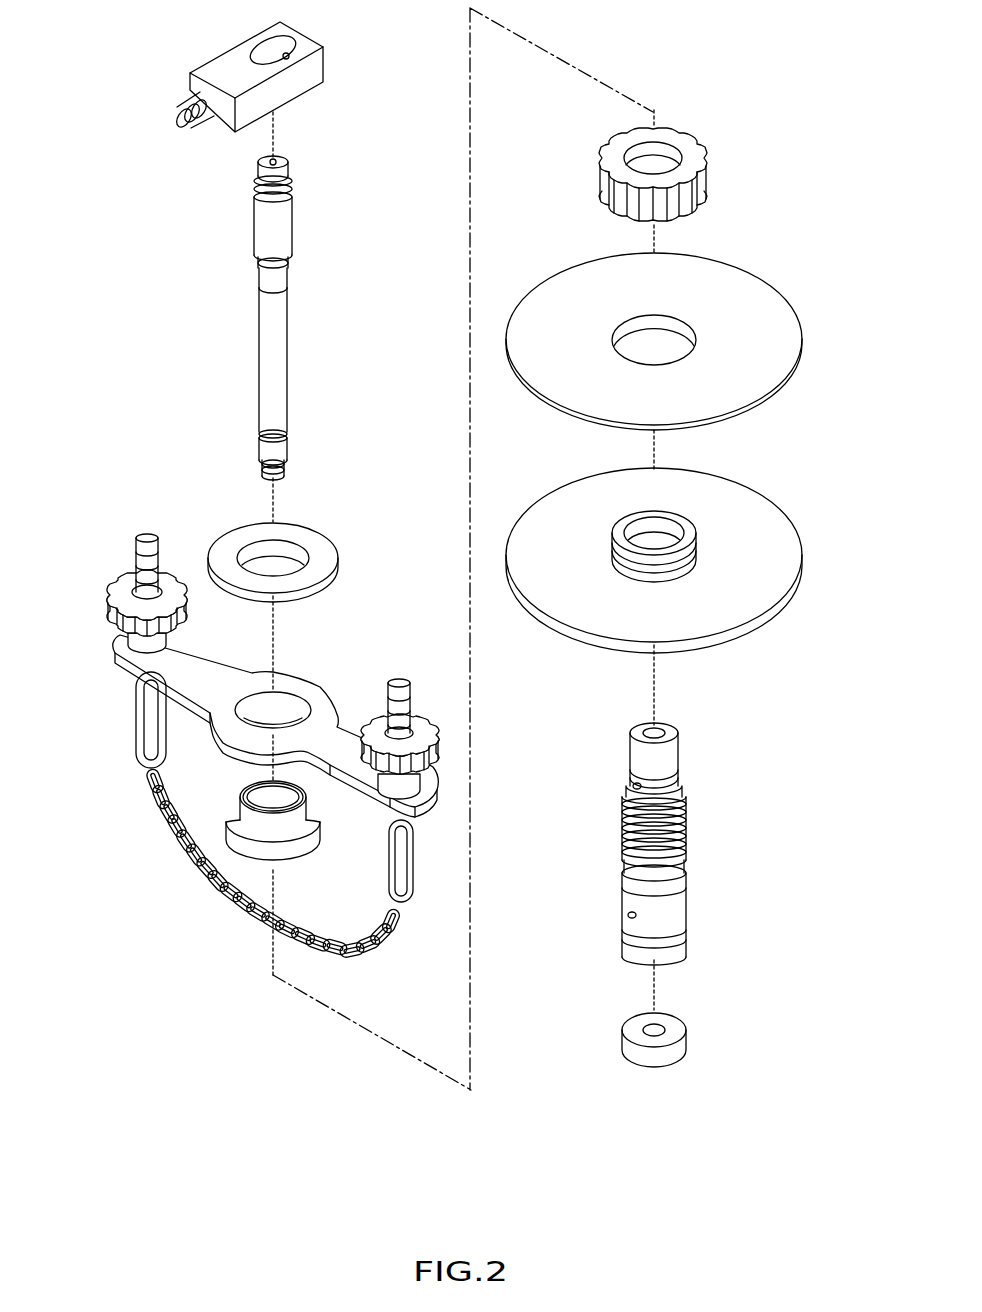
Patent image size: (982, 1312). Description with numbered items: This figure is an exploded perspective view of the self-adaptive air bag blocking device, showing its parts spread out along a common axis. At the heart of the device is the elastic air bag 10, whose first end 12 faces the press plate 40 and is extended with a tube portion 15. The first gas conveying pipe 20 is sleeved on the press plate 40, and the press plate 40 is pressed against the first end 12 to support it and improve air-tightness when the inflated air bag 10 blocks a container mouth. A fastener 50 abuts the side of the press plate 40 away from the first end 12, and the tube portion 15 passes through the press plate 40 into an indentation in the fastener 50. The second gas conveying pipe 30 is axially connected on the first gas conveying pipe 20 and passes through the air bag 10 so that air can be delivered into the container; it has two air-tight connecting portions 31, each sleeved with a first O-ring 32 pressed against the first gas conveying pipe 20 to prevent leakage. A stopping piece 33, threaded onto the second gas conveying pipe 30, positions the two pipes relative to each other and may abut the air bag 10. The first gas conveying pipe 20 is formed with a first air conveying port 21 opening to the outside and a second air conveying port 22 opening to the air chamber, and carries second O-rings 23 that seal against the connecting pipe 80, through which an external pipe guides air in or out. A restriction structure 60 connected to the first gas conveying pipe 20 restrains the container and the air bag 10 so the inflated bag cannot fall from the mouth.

The air bag 10 is at (775, 500).
The first end 12 is at (768, 572).
The tube portion 15 is at (690, 520).
The first gas conveying pipe 20 is at (687, 900).
The first air conveying port 21 is at (634, 785).
The second air conveying port 22 is at (629, 914).
The second O-ring 23 is at (678, 767).
The second gas conveying pipe 30 is at (254, 228).
The air-tight connecting portion 31 is at (294, 279).
The first O-ring 32 is at (292, 264).
The stopping piece 33 is at (687, 1038).
The press plate 40 is at (757, 272).
The fastener 50 is at (710, 145).
The restriction structure 60 is at (134, 779).
The connecting pipe 80 is at (204, 65).